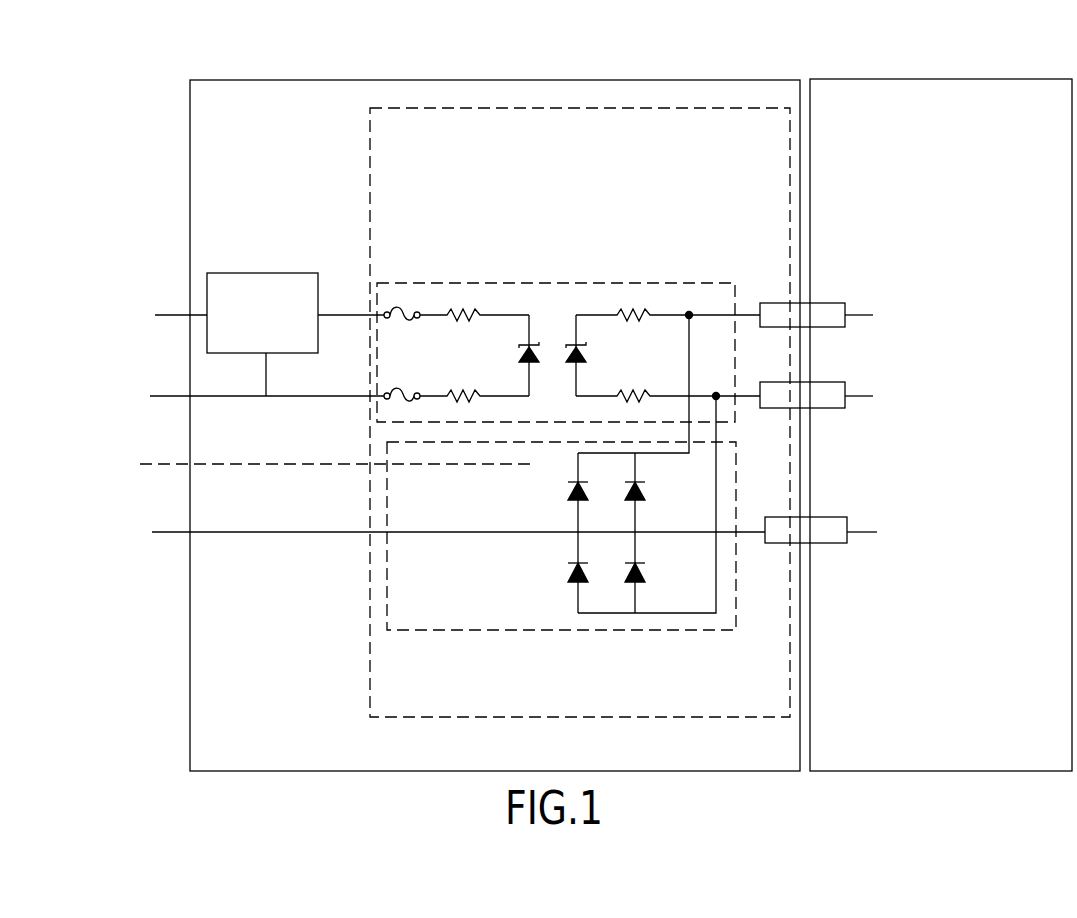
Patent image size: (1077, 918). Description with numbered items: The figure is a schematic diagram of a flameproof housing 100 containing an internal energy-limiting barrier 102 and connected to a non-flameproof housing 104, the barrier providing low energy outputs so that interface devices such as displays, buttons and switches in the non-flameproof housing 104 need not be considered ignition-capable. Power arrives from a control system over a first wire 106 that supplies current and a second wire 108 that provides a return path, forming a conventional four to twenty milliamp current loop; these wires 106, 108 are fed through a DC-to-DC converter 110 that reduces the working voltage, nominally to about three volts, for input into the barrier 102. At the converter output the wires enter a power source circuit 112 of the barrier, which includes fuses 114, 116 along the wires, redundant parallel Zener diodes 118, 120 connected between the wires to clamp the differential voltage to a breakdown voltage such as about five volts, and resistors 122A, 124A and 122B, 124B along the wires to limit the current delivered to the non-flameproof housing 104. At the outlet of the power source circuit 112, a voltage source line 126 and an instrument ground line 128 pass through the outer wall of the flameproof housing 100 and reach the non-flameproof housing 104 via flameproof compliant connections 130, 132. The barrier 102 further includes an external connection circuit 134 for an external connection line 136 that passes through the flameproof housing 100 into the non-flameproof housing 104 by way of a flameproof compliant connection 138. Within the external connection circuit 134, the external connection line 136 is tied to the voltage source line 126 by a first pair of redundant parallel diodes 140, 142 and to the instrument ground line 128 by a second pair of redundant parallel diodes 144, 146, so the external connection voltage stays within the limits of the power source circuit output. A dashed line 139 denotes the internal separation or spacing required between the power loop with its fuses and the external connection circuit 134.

The flameproof housing 100 is at (306, 80).
The energy-limiting barrier 102 is at (517, 108).
The non-flameproof housing 104 is at (902, 78).
The first wire 106 is at (168, 314).
The second wire 108 is at (165, 397).
The DC-to-DC converter 110 is at (258, 272).
The power source circuit 112 is at (687, 284).
The fuse 114 is at (408, 298).
The fuse 116 is at (380, 420).
The Zener diode 118 is at (536, 345).
The Zener diode 120 is at (583, 345).
The resistor 122A is at (474, 292).
The resistor 122B is at (647, 312).
The resistor 124A is at (470, 393).
The resistor 124B is at (640, 393).
The voltage source line 126 is at (866, 313).
The instrument ground line 128 is at (866, 395).
The flameproof compliant connection 130 is at (828, 303).
The flameproof compliant connection 132 is at (826, 382).
The external connection circuit 134 is at (675, 631).
The external connection line 136 is at (283, 533).
The flameproof compliant connection 138 is at (828, 517).
The dashed line 139 is at (170, 466).
The diode 140 is at (570, 490).
The diode 142 is at (648, 486).
The diode 144 is at (570, 570).
The diode 146 is at (648, 567).